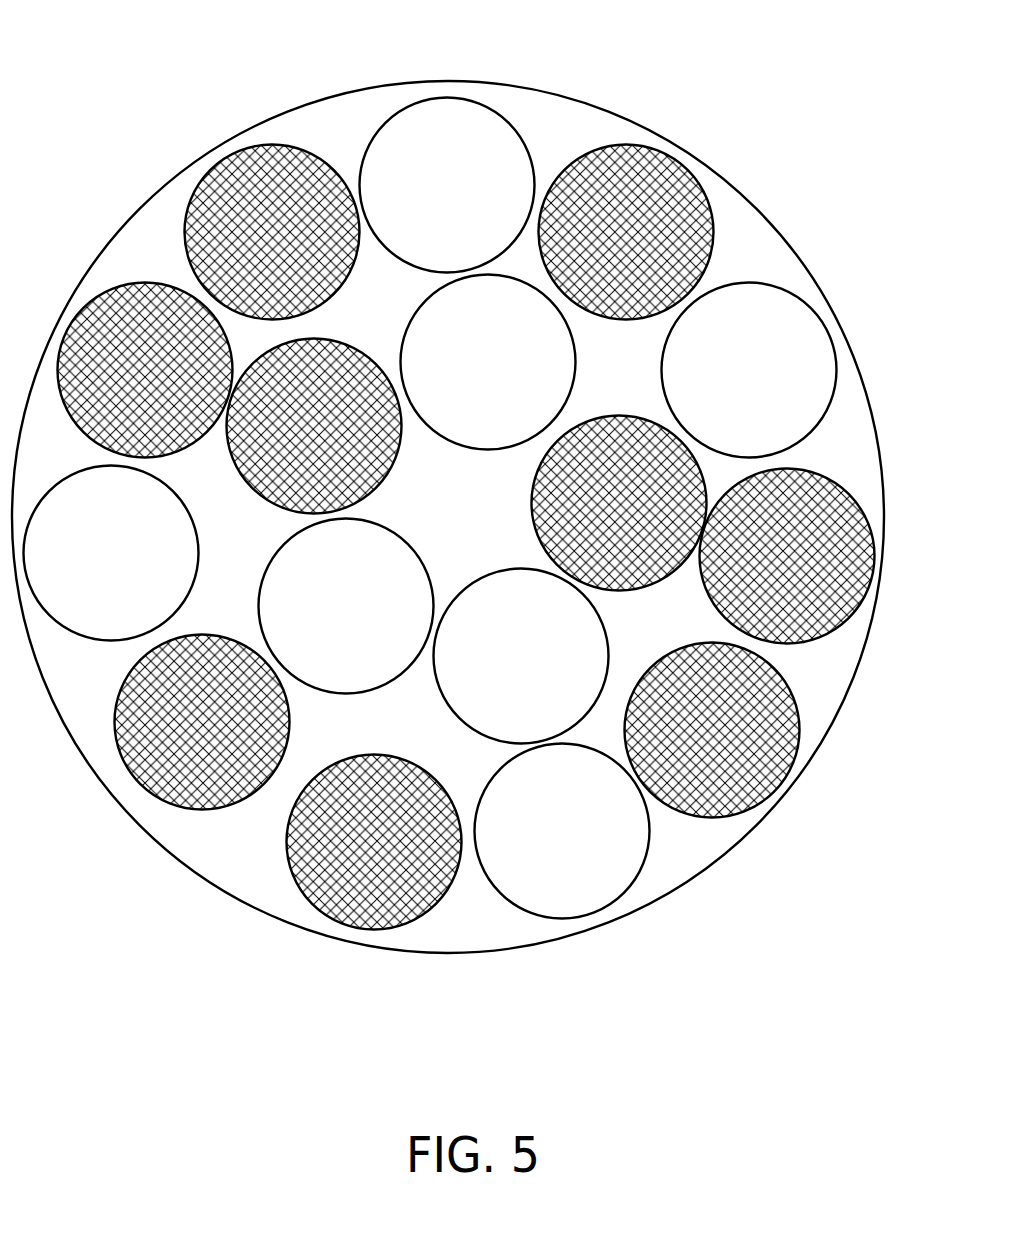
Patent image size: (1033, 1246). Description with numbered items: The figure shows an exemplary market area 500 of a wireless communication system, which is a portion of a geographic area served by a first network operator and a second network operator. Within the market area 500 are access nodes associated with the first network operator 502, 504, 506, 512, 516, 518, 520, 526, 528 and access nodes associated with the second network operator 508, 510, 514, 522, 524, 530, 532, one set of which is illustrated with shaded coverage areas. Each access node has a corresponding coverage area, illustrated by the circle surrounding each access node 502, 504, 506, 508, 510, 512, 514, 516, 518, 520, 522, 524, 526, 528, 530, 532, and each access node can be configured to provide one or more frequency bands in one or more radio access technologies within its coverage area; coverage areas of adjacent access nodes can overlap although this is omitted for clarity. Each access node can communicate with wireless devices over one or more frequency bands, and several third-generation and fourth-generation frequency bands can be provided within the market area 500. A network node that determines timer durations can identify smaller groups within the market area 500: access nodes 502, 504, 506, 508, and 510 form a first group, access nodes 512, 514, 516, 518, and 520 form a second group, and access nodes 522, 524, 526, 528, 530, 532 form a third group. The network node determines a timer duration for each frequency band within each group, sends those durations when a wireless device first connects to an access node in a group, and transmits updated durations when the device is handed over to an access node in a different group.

The market area 500 is at (638, 123).
The access node 502 is at (145, 370).
The access node 504 is at (272, 232).
The access node 506 is at (314, 426).
The access node 508 is at (447, 185).
The access node 510 is at (488, 362).
The access node 512 is at (626, 232).
The access node 514 is at (749, 370).
The access node 516 is at (787, 556).
The access node 518 is at (619, 503).
The access node 520 is at (712, 730).
The access node 522 is at (562, 831).
The access node 524 is at (521, 656).
The access node 526 is at (374, 842).
The access node 528 is at (202, 722).
The access node 530 is at (346, 606).
The access node 532 is at (111, 553).